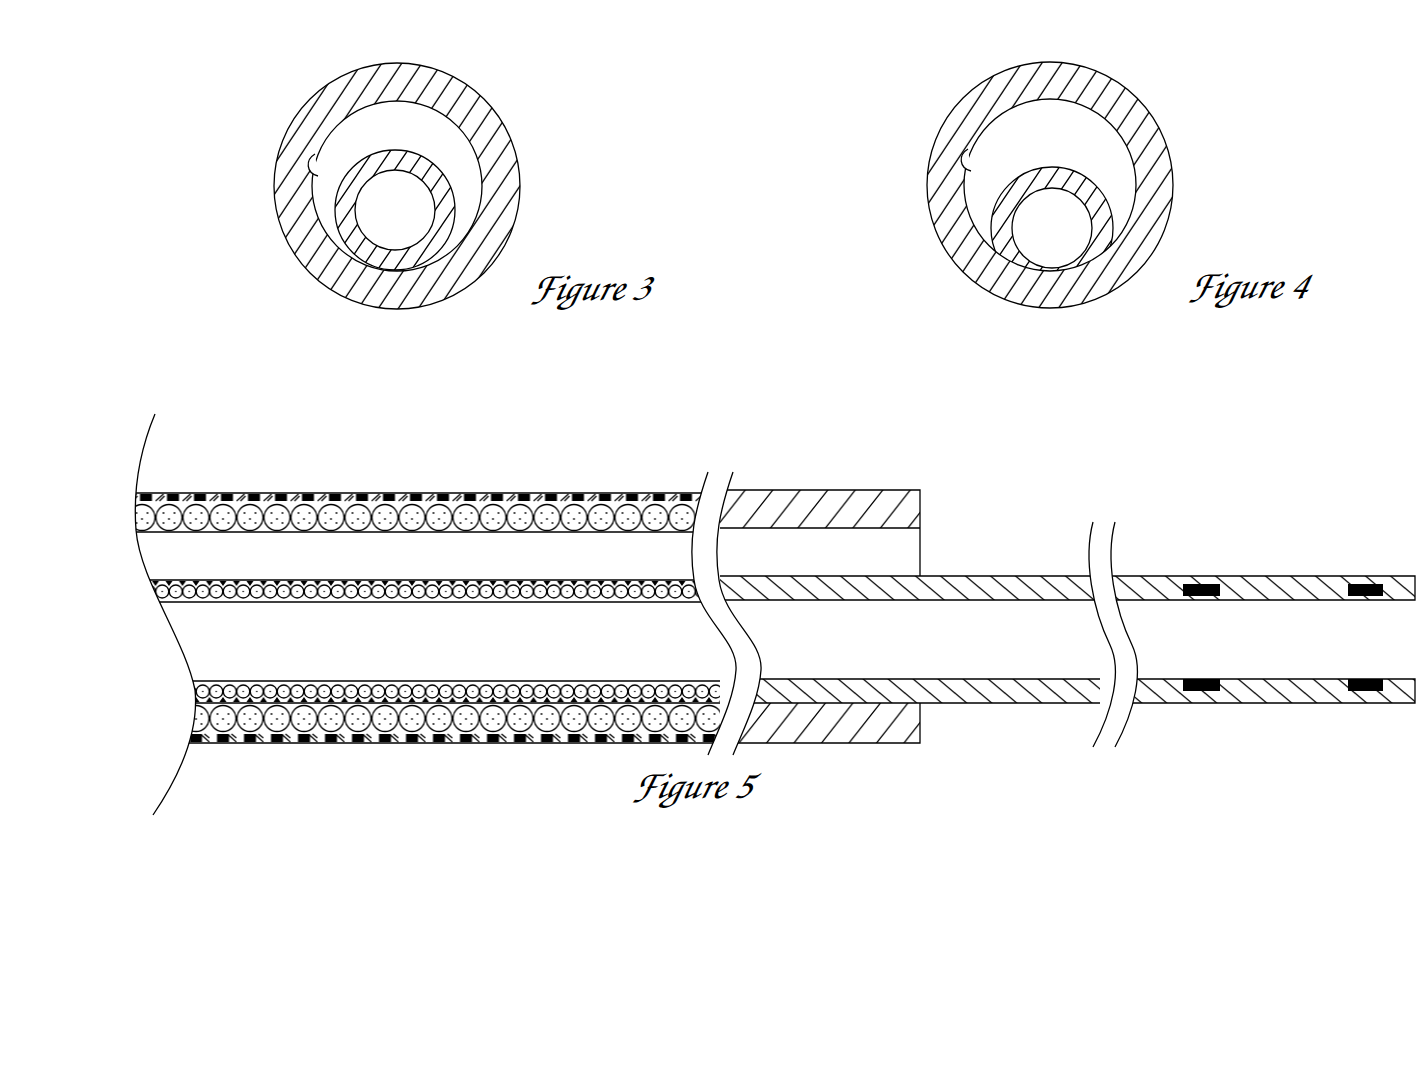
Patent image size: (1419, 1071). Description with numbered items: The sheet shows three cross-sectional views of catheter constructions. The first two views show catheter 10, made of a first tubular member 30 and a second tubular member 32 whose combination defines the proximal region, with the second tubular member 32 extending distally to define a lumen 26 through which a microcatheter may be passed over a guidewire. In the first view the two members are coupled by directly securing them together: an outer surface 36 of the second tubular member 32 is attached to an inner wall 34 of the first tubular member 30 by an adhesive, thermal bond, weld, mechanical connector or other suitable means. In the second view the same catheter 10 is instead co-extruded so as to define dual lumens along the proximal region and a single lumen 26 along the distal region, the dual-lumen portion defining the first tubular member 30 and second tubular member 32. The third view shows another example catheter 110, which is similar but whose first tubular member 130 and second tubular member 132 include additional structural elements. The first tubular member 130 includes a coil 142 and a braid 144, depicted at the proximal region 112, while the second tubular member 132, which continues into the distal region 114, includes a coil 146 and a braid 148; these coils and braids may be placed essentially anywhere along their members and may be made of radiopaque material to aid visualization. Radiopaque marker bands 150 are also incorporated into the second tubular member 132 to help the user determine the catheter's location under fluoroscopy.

In FIG. 3, the catheter 10 is at (276, 78).
In FIG. 4, the catheter 10 is at (933, 77).
In FIG. 3, the lumen 26 is at (410, 193).
In FIG. 4, the lumen 26 is at (1065, 212).
In FIG. 3, the first tubular member 30 is at (297, 227).
In FIG. 4, the first tubular member 30 is at (950, 227).
In FIG. 3, the second tubular member 32 is at (365, 253).
In FIG. 4, the second tubular member 32 is at (1003, 248).
In FIG. 3, the inner wall 34 is at (313, 180).
In FIG. 4, the inner wall 34 is at (970, 175).
In FIG. 3, the outer surface 36 is at (457, 227).
In FIG. 4, the outer surface 36 is at (1113, 222).
In FIG. 5, the catheter 110 is at (554, 438).
In FIG. 5, the proximal region 112 is at (378, 468).
In FIG. 5, the distal region 114 is at (1274, 552).
In FIG. 5, the first tubular member 130 is at (510, 492).
In FIG. 5, the second tubular member 132 is at (1168, 576).
In FIG. 5, the coil 142 is at (237, 510).
In FIG. 5, the braid 144 is at (333, 500).
In FIG. 5, the coil 146 is at (283, 703).
In FIG. 5, the braid 148 is at (397, 703).
In FIG. 5, the marker bands 150 is at (1200, 691).